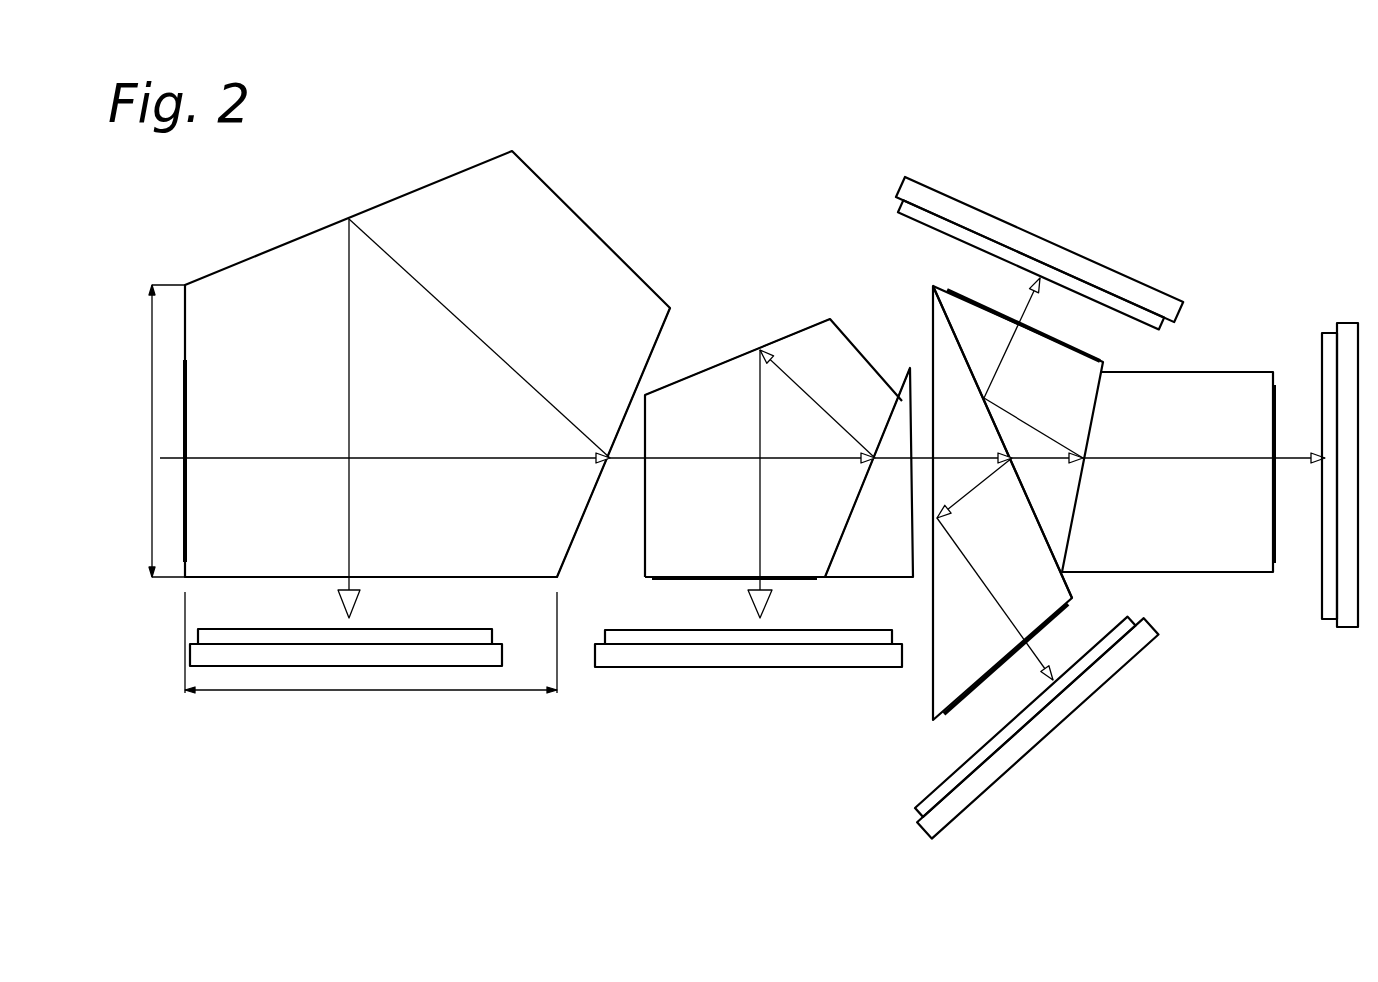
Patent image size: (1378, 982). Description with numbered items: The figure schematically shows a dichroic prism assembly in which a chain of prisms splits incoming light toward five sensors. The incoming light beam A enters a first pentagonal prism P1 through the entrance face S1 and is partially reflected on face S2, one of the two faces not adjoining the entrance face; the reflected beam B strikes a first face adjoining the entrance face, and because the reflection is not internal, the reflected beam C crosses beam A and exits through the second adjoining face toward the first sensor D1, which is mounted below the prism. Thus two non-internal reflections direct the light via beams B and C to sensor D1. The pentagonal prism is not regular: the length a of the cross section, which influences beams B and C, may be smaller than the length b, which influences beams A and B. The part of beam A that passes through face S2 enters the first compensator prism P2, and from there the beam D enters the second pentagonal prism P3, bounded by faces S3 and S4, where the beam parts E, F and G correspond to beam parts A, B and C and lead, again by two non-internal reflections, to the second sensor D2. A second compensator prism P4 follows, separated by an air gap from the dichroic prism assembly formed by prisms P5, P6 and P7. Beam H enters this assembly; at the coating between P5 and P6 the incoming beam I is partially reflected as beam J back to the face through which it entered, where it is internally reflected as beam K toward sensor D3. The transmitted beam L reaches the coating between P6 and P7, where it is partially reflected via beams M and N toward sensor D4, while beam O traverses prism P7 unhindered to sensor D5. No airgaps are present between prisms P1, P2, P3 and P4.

The first pentagonal prism P1 is at (607, 237).
The first compensator prism P2 is at (632, 433).
The second pentagonal prism P3 is at (782, 332).
The second compensator prism P4 is at (899, 399).
The dichroic prism P5 is at (950, 366).
The dichroic prism P6 is at (1082, 360).
The dichroic prism P7 is at (1250, 387).
The first sensor D1 is at (300, 657).
The second sensor D2 is at (712, 655).
The red light sensor D3 is at (1077, 700).
The green light sensor D4 is at (1062, 260).
The blue light sensor D5 is at (1328, 580).
The entrance face S1 is at (178, 515).
The face S2 is at (583, 528).
The third surface S3 is at (638, 537).
The fourth surface S4 is at (841, 545).
The incoming light beam A is at (403, 460).
The reflected beam B is at (478, 337).
The reflected beam C is at (349, 390).
The beam D is at (628, 461).
The beam part E is at (720, 460).
The beam part F is at (822, 404).
The beam part G is at (762, 538).
The beam H is at (896, 460).
The incoming beam I is at (972, 457).
The beam J is at (975, 489).
The beam K is at (993, 602).
The beam L is at (1050, 461).
The beam M is at (1038, 431).
The beam N is at (1006, 353).
The beam O is at (1233, 460).
The length a is at (159, 431).
The length b is at (371, 653).